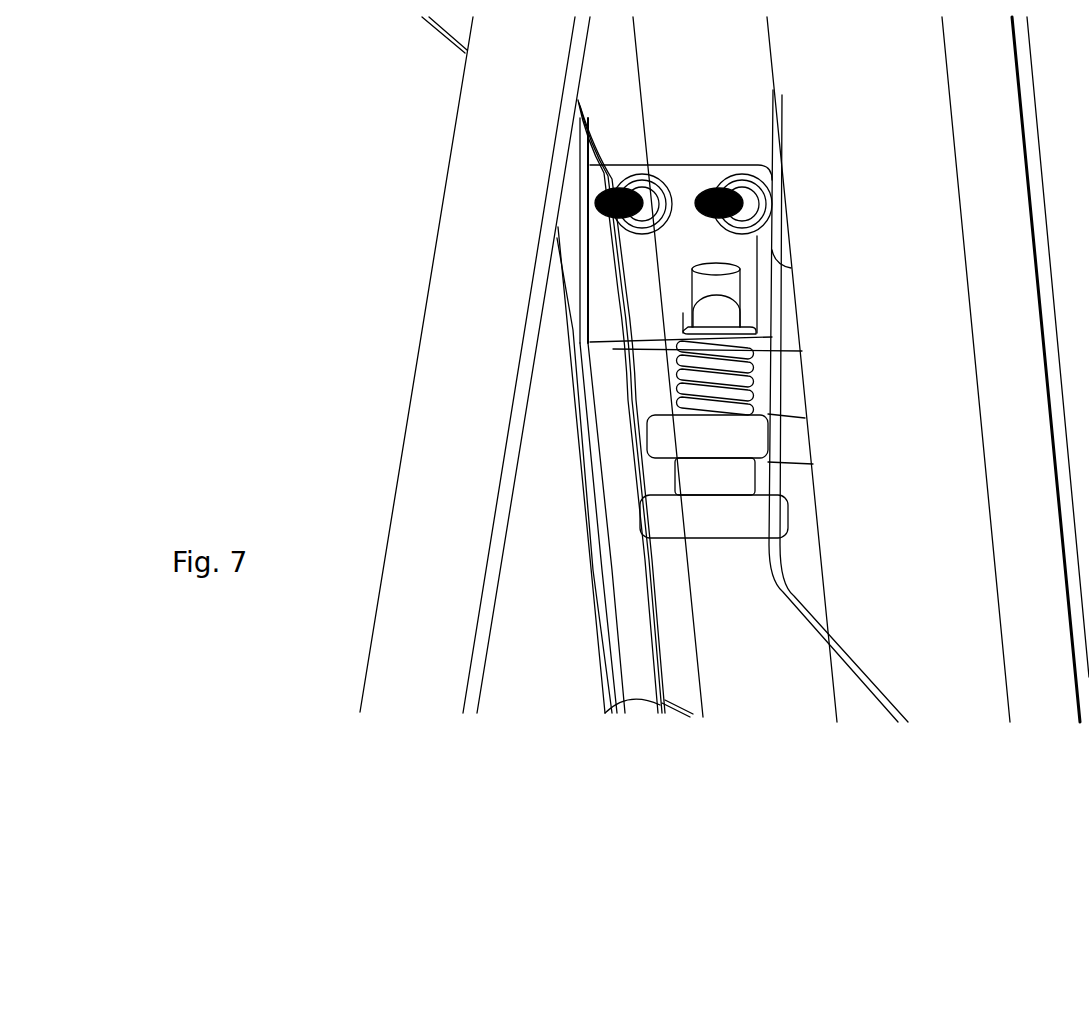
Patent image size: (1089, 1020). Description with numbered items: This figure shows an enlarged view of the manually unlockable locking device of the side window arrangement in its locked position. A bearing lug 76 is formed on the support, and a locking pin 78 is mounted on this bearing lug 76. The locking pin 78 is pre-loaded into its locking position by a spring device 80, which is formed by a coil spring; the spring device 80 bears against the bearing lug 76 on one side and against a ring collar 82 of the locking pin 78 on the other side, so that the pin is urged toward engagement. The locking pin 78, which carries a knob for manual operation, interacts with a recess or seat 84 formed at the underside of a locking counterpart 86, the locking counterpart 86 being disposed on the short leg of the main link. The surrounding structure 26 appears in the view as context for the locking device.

The fork leg 26 is at (618, 592).
The bearing lug 76 is at (667, 442).
The locking pin 78 is at (662, 516).
The spring device 80 is at (675, 393).
The ring collar 82 is at (680, 341).
The seat 84 is at (703, 283).
The locking counterpart 86 is at (603, 268).